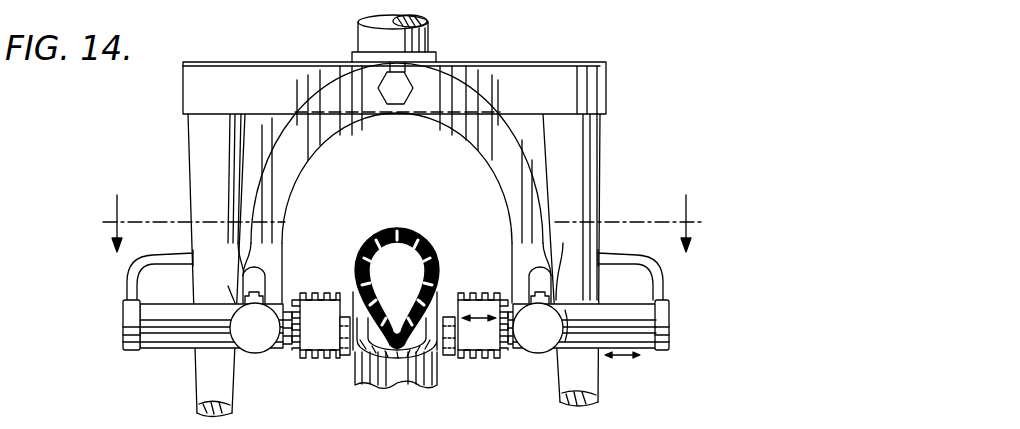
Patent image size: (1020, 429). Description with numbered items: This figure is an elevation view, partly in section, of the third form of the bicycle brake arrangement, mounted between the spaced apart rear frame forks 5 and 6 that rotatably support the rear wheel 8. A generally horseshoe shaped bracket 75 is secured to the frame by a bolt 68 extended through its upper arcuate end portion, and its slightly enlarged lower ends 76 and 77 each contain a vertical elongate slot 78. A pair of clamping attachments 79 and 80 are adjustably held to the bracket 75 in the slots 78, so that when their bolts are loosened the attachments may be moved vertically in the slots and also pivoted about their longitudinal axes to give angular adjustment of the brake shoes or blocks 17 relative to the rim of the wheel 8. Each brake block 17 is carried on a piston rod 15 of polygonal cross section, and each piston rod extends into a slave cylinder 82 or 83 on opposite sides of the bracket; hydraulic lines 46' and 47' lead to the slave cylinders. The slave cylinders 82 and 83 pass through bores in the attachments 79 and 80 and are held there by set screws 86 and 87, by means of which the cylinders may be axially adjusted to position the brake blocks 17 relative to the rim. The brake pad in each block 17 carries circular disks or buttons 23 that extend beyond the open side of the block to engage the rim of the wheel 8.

The rear frame fork 5 is at (188, 172).
The rear frame fork 6 is at (600, 170).
The rear wheel 8 is at (395, 236).
The piston rod 15 is at (508, 375).
The brake tray or block 17 is at (330, 281).
The circular disks or buttons 23 is at (340, 358).
The left hose 46' is at (134, 275).
The right hose 47' is at (660, 275).
The bolt 68 is at (410, 84).
The horseshoe shaped bracket 75 is at (483, 96).
The lower end of bracket 76 is at (228, 289).
The lower end of bracket 77 is at (557, 275).
The vertical elongate slot 78 is at (262, 270).
The clamping attachment 79 is at (252, 354).
The clamping attachment 80 is at (540, 352).
The slave cylinder 82 is at (170, 350).
The slave cylinder 83 is at (645, 350).
The set screw 86 is at (243, 304).
The set screw 87 is at (548, 290).